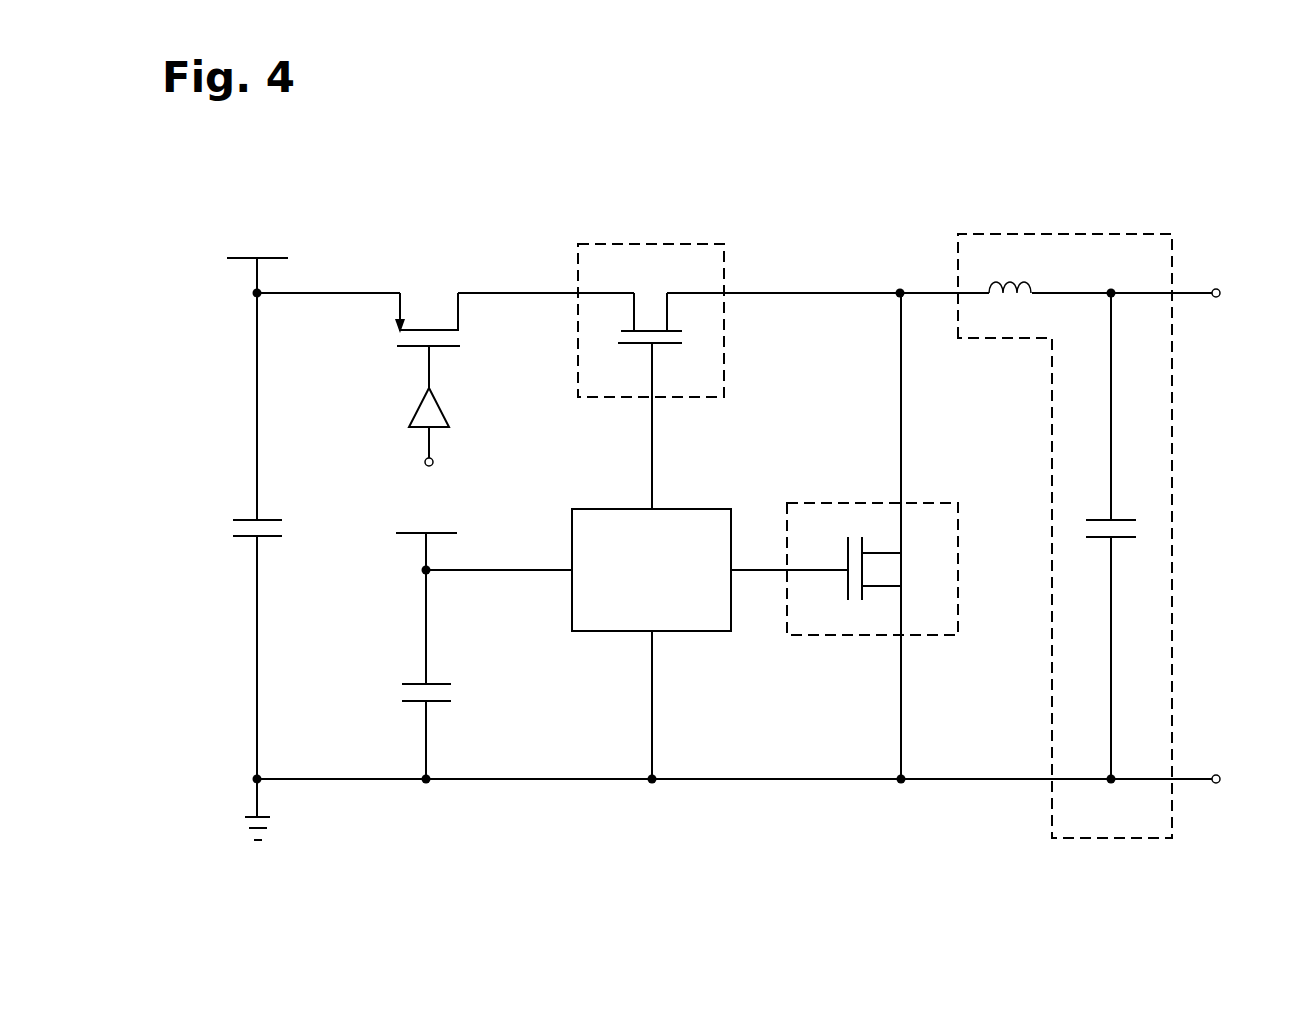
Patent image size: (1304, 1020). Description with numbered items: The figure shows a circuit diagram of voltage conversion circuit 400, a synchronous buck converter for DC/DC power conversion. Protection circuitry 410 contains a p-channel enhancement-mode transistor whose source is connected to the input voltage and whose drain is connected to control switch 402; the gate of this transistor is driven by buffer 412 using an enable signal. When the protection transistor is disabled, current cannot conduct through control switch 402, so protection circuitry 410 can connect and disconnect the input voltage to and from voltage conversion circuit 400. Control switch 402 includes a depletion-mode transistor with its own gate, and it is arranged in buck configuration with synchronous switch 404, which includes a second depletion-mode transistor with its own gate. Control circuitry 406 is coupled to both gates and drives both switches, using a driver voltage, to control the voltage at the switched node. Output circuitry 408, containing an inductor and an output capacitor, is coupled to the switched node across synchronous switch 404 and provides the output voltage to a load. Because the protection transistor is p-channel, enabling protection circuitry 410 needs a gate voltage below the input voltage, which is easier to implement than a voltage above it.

The voltage conversion circuit 400 is at (1222, 138).
The control switch 402 is at (744, 199).
The synchronous switch 404 is at (972, 458).
The control circuitry 406 is at (605, 530).
The output circuitry 408 is at (1097, 192).
The protection circuitry 410 is at (489, 209).
The buffer 412 is at (433, 417).